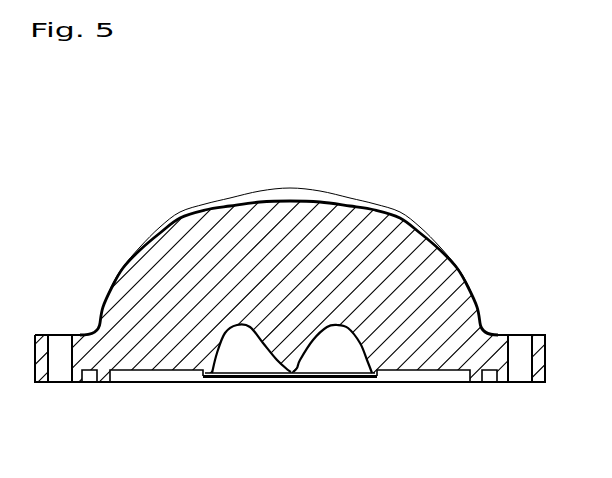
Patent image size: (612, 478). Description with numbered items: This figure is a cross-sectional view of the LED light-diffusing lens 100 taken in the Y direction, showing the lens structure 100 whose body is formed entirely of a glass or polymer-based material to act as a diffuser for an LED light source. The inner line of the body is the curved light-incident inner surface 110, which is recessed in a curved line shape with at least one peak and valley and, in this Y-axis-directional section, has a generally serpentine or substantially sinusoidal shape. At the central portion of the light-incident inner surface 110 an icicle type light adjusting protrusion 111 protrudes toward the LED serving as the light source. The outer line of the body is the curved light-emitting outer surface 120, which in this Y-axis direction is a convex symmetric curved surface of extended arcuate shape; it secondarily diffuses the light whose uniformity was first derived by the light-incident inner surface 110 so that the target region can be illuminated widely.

The LED light-diffusing lens 100 is at (480, 148).
The light-incident inner surface 110 is at (265, 357).
The light adjusting protrusion 111 is at (294, 374).
The light-emitting outer surface 120 is at (290, 187).